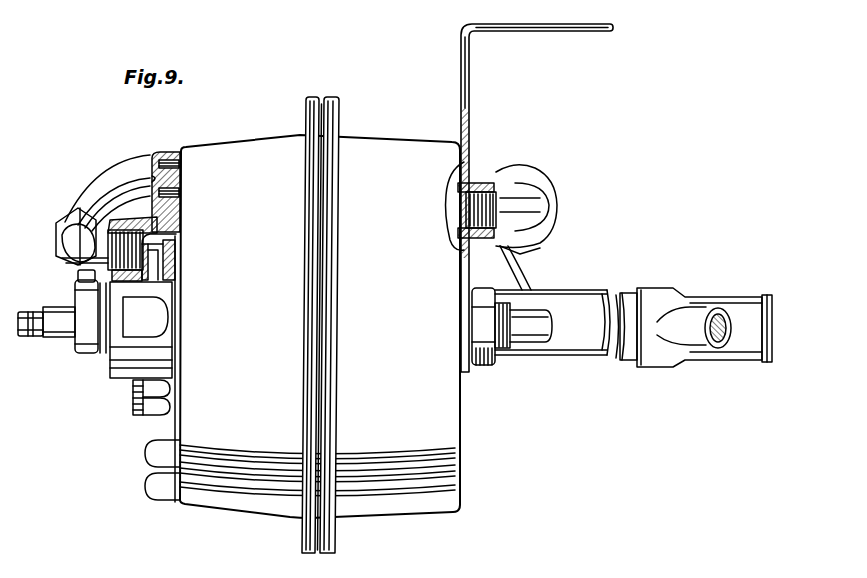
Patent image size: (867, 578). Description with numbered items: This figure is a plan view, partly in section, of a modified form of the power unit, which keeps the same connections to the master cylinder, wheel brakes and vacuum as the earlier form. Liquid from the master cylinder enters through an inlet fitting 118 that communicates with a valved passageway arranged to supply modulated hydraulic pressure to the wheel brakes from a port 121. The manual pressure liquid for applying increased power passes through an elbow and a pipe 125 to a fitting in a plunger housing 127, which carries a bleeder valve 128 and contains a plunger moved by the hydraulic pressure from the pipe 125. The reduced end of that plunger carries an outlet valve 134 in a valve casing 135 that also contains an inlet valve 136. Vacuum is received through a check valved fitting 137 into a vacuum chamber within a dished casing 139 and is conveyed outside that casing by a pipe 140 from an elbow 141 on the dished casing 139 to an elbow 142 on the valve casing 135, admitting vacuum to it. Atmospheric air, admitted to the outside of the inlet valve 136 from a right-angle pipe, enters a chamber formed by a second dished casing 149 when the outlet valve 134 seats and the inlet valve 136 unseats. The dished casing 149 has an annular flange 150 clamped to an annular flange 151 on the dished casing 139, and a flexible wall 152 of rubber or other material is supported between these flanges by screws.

The inlet fitting 118 is at (766, 301).
The port 121 is at (722, 310).
The pipe 125 is at (519, 275).
The plunger housing 127 is at (69, 343).
The bleeder valve 128 is at (35, 339).
The outlet valve 134 is at (157, 277).
The valve casing 135 is at (131, 222).
The inlet valve 136 is at (175, 241).
The check valved fitting 137 is at (492, 366).
The dished casing 139 is at (420, 147).
The pipe 140 is at (503, 174).
The elbow 141 is at (536, 207).
The elbow 142 is at (73, 256).
The dished casing 149 is at (212, 149).
The annular flange 150 is at (313, 101).
The annular flange 151 is at (339, 106).
The flexible wall 152 is at (306, 116).